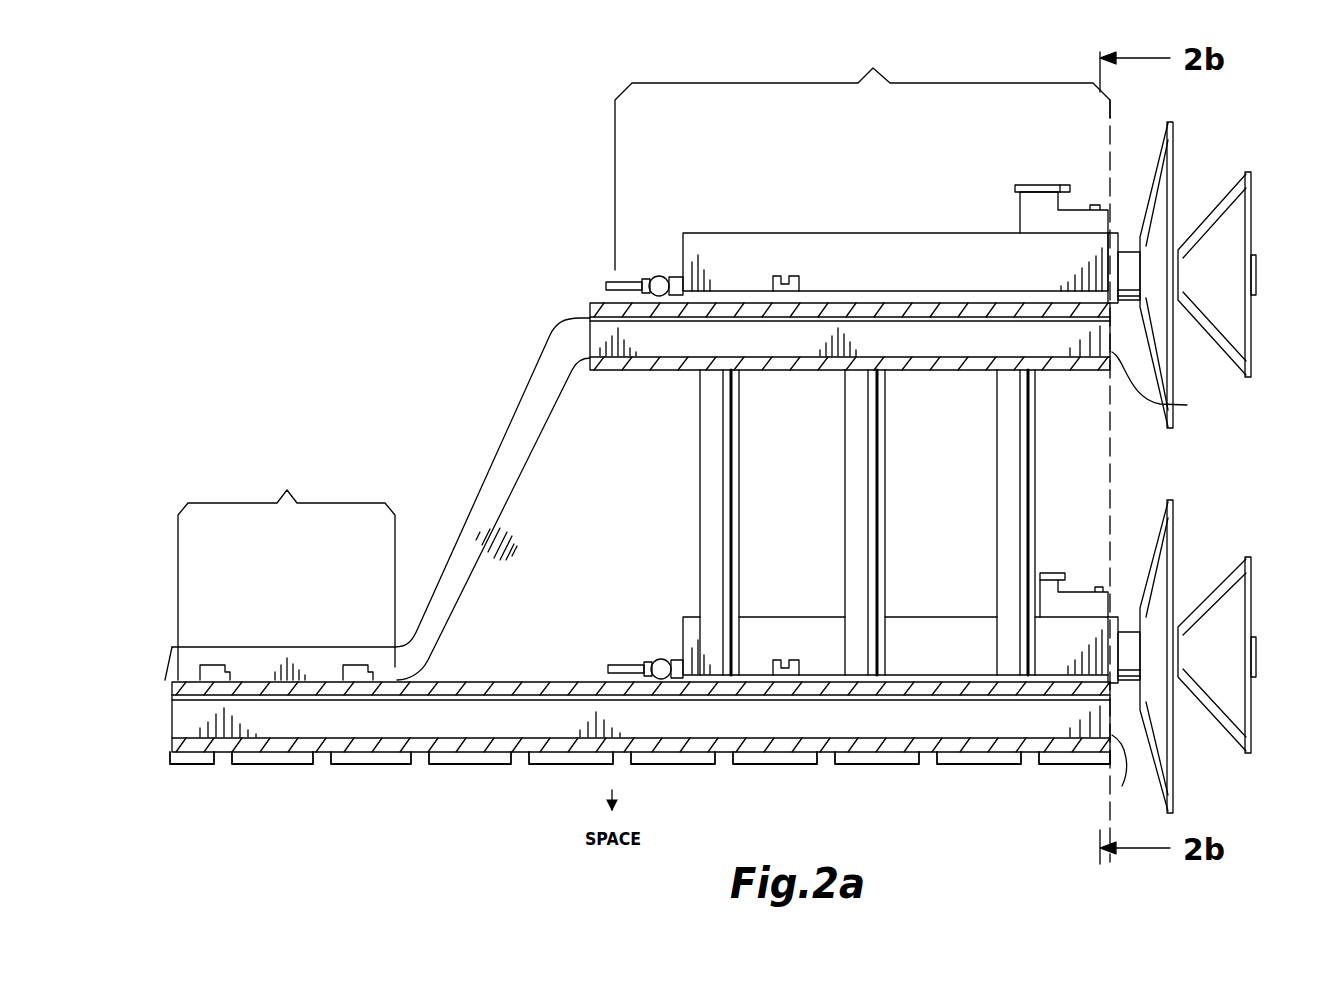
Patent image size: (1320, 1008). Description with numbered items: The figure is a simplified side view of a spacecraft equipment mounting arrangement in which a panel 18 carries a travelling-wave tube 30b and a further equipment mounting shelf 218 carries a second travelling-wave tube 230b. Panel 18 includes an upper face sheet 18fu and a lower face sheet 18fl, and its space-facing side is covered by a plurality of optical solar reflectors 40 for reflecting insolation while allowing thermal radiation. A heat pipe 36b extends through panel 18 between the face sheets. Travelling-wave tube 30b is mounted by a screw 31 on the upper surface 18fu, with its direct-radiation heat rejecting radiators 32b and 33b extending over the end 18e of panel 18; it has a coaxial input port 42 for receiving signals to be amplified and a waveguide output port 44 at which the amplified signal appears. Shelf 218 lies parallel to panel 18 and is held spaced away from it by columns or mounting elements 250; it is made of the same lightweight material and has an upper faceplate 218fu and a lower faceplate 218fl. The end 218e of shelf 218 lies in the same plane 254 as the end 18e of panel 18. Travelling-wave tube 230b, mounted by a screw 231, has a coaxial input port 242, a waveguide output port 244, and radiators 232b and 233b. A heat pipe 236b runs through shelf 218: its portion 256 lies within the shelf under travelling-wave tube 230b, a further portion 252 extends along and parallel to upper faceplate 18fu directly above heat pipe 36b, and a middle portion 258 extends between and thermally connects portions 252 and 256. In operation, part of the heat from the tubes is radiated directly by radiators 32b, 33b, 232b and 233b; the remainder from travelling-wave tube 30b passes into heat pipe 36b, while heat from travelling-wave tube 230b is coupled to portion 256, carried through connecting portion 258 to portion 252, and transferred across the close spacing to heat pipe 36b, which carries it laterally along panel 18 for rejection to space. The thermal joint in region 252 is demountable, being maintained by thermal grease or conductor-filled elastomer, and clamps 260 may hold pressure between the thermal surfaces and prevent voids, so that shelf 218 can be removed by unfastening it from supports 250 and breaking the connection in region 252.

The heat pipe portion 256 is at (873, 68).
The heat pipe portion 252 is at (287, 490).
The plane 254 is at (1113, 462).
The travelling-wave tube 230b is at (948, 233).
The waveguide output port 244 is at (1041, 184).
The coaxial input port 242 is at (651, 276).
The screw 231 is at (800, 277).
The equipment mounting shelf 218 is at (652, 480).
The upper faceplate 218fu is at (591, 303).
The lower faceplate 218fl is at (785, 371).
The heat pipe 236b is at (665, 350).
The end of shelf 218e is at (1178, 386).
The direct-radiation heat rejecting radiator 233b is at (1173, 125).
The direct-radiation heat rejecting radiator 232b is at (1251, 205).
The direct-radiation heat rejecting radiator 33b is at (1173, 512).
The direct-radiation heat rejecting radiator 32b is at (1251, 586).
The middle portion of heat pipes 258 is at (464, 458).
The clamps 260 is at (358, 663).
The columns or mounting elements 250 is at (997, 468).
The travelling-wave tube 30b is at (937, 616).
The waveguide output port 44 is at (1052, 573).
The coaxial input port 42 is at (654, 660).
The screw 31 is at (800, 661).
The panel 18 is at (599, 717).
The upper face sheet 18fu is at (524, 681).
The lower face sheet 18fl is at (415, 764).
The heat pipe 36b is at (170, 714).
The optical solar reflectors 40 is at (558, 764).
The end of panel 18e is at (1127, 774).